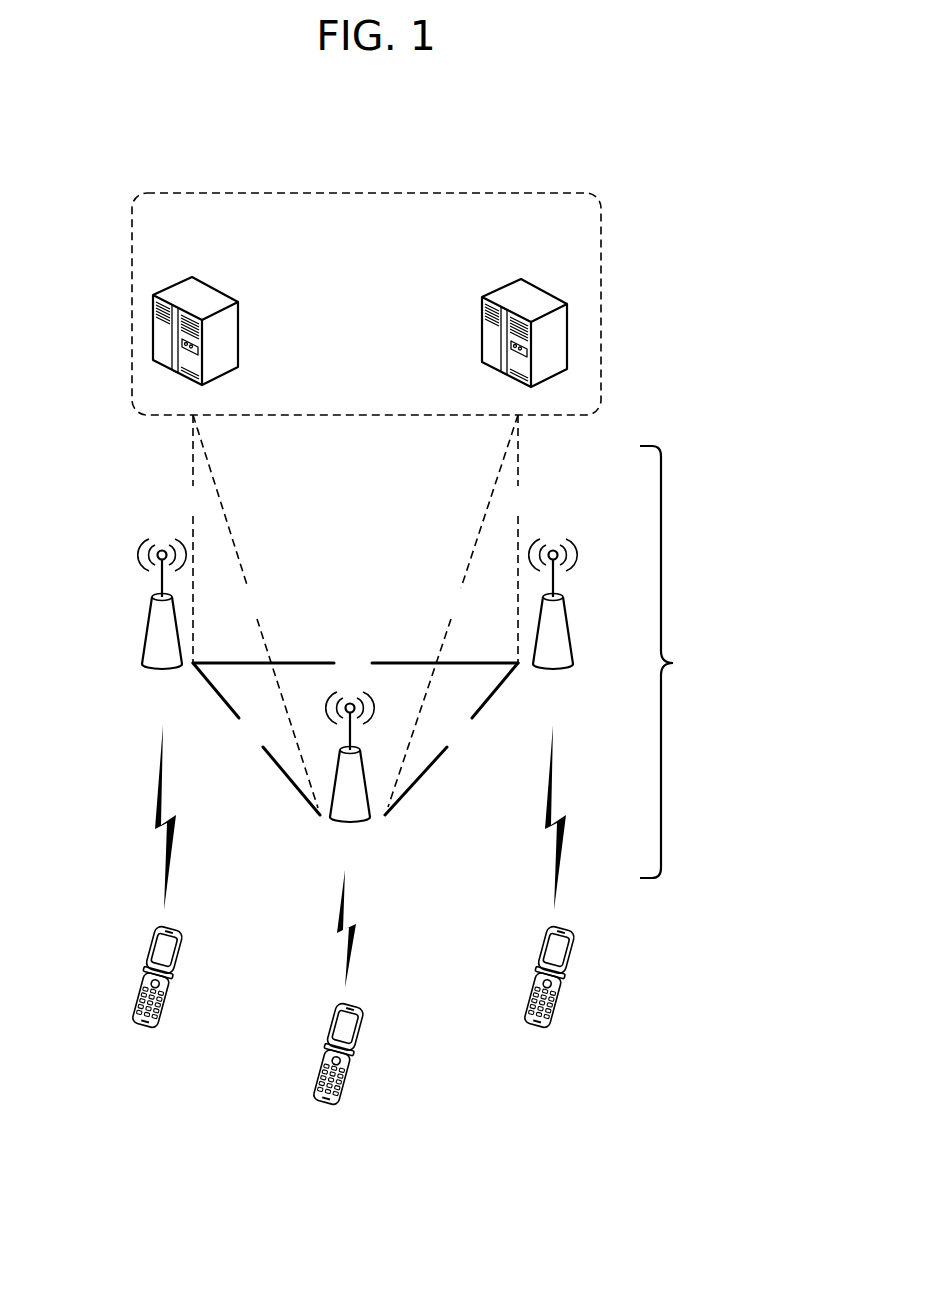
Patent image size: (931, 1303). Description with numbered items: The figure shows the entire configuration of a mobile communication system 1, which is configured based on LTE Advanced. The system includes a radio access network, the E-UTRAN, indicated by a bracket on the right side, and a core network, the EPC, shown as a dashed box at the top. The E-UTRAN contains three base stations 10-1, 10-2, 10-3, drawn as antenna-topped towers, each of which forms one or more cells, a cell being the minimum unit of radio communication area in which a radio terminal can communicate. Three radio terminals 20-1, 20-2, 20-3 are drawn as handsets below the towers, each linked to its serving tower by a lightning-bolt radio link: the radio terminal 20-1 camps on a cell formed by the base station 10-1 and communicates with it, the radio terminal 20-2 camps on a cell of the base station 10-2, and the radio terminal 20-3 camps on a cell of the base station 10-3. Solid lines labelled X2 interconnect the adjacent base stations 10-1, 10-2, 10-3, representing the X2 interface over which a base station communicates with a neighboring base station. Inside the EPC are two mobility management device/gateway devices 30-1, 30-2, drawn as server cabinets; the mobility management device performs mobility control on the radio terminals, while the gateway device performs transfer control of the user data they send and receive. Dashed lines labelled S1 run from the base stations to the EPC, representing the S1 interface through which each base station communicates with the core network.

The mobile communication system 1 is at (358, 114).
The base station 10-1 is at (358, 822).
The base station 10-2 is at (146, 627).
The base station 10-3 is at (570, 617).
The radio terminal 20-1 is at (330, 1105).
The radio terminal 20-2 is at (148, 1027).
The radio terminal 20-3 is at (537, 1027).
The mobility management device/gateway device 30-1 is at (213, 290).
The mobility management device/gateway device 30-2 is at (497, 289).